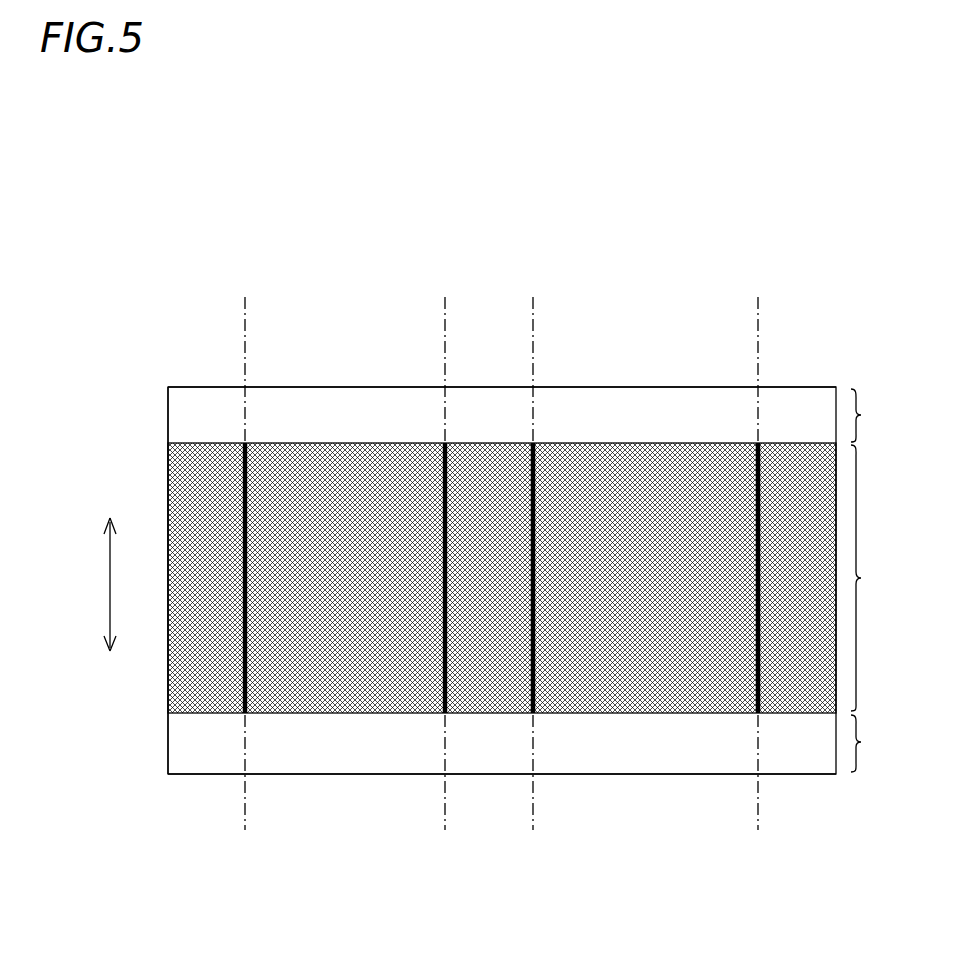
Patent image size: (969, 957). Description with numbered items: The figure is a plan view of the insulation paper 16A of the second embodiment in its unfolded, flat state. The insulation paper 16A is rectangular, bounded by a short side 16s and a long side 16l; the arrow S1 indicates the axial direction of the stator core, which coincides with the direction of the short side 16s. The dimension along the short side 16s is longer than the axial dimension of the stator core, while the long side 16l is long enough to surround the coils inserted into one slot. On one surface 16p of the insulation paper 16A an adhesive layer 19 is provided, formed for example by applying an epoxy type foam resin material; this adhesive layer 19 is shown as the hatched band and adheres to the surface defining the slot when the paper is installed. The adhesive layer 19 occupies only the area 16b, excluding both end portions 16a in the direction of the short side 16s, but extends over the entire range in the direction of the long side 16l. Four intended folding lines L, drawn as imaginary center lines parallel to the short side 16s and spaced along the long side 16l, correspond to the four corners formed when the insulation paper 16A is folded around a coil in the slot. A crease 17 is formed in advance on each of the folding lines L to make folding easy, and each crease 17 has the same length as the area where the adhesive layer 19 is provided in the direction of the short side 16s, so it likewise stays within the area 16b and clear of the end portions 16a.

The insulation paper 16A is at (190, 384).
The short side 16s is at (168, 423).
The surface 16p is at (684, 402).
The long side 16l is at (707, 776).
The end portions 16a is at (875, 580).
The area 16b is at (875, 578).
The crease 17 is at (245, 670).
The adhesive layer 19 is at (193, 486).
The intended folding lines L is at (247, 348).
The arrow S1 is at (96, 584).